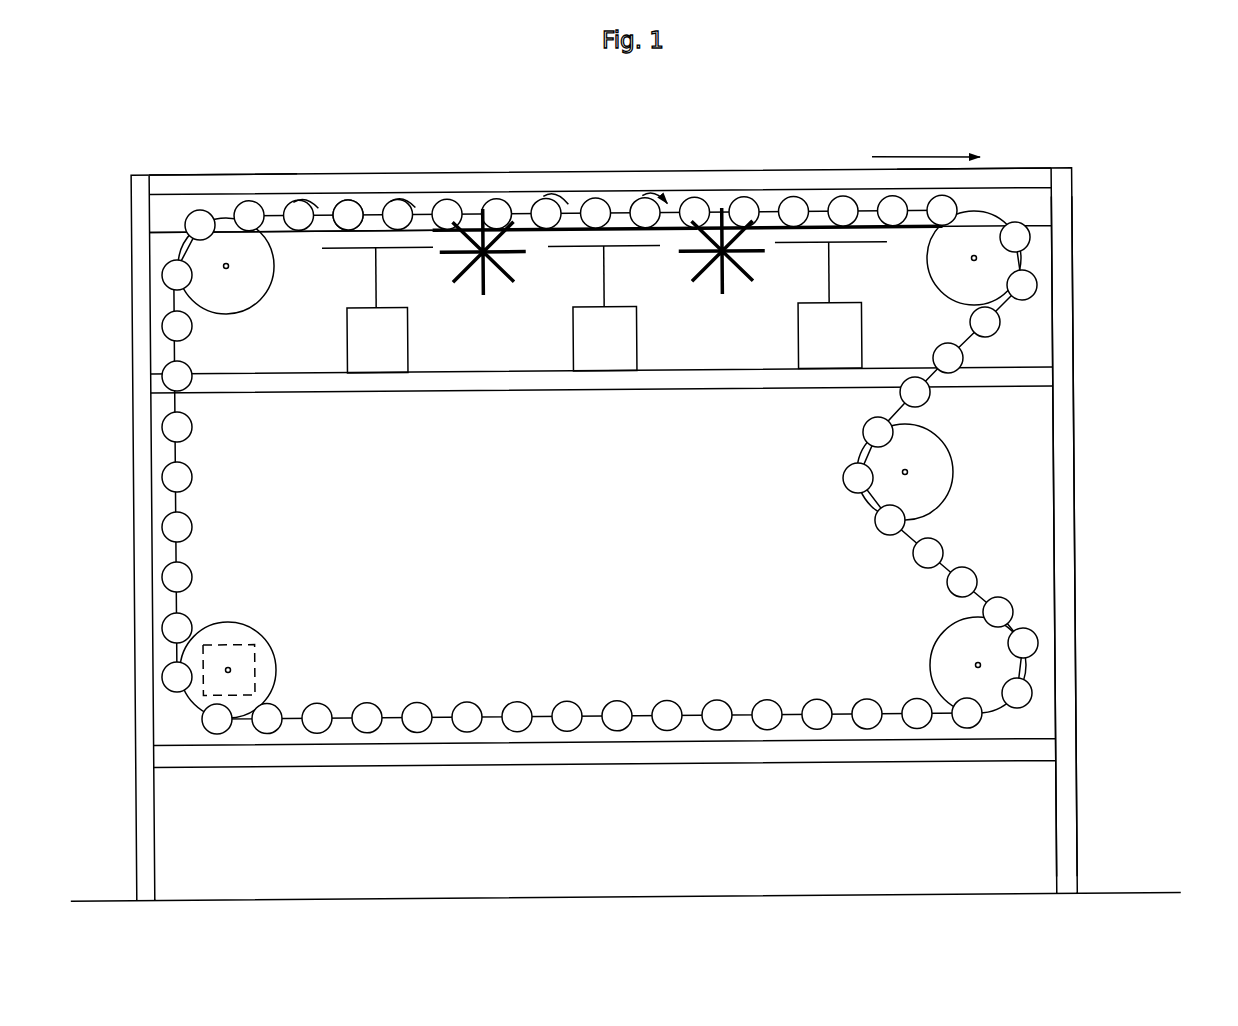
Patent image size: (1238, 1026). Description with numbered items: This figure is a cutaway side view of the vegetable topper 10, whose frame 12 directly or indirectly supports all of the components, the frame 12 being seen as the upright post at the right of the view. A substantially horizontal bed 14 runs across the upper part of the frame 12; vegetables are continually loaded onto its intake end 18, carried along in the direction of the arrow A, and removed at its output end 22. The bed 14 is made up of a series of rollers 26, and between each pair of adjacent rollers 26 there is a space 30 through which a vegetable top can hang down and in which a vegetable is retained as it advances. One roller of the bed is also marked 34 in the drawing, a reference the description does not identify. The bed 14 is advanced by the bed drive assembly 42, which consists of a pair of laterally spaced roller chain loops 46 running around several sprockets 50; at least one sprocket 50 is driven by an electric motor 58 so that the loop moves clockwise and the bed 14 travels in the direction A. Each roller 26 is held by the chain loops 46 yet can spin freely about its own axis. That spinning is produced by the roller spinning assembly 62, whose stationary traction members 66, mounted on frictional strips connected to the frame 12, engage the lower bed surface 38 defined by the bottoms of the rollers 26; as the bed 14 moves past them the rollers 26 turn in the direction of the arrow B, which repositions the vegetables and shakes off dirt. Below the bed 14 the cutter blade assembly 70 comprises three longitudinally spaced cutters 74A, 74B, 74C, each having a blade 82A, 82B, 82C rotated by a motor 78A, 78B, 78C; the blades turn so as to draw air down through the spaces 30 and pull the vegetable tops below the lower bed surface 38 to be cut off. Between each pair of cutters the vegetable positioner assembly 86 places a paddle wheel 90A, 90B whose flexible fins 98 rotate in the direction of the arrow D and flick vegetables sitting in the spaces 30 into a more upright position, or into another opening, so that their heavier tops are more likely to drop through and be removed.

The vegetable topper 10 is at (1074, 171).
The frame 12 is at (1075, 320).
The bed 14 is at (604, 200).
The intake end 18 is at (212, 166).
The output end 22 is at (1015, 163).
The rollers 26 is at (449, 204).
The space 30 is at (274, 206).
The chain pin 34 is at (351, 197).
The lower bed surface 38 is at (283, 233).
The bed drive assembly 42 is at (292, 676).
The roller chain loops 46 is at (181, 549).
The sprockets 50 is at (237, 314).
The electric motor 58 is at (229, 647).
The roller spinning assembly 62 is at (772, 233).
The traction members 66 is at (537, 236).
The cutter blade assembly 70 is at (618, 403).
The cutter 74A is at (378, 268).
The cutter 74B is at (608, 272).
The cutter 74C is at (832, 262).
The motor 78A is at (377, 340).
The motor 78B is at (605, 339).
The motor 78C is at (830, 336).
The blade 82A is at (346, 249).
The blade 82B is at (567, 248).
The blade 82C is at (792, 246).
The vegetable positioner assembly 86 is at (476, 280).
The paddle wheel 90A is at (452, 257).
The paddle wheel 90B is at (695, 280).
The paddle wheel fins 98 is at (729, 288).
The arrow A is at (925, 157).
The arrow B is at (322, 206).
The arrow D is at (522, 279).